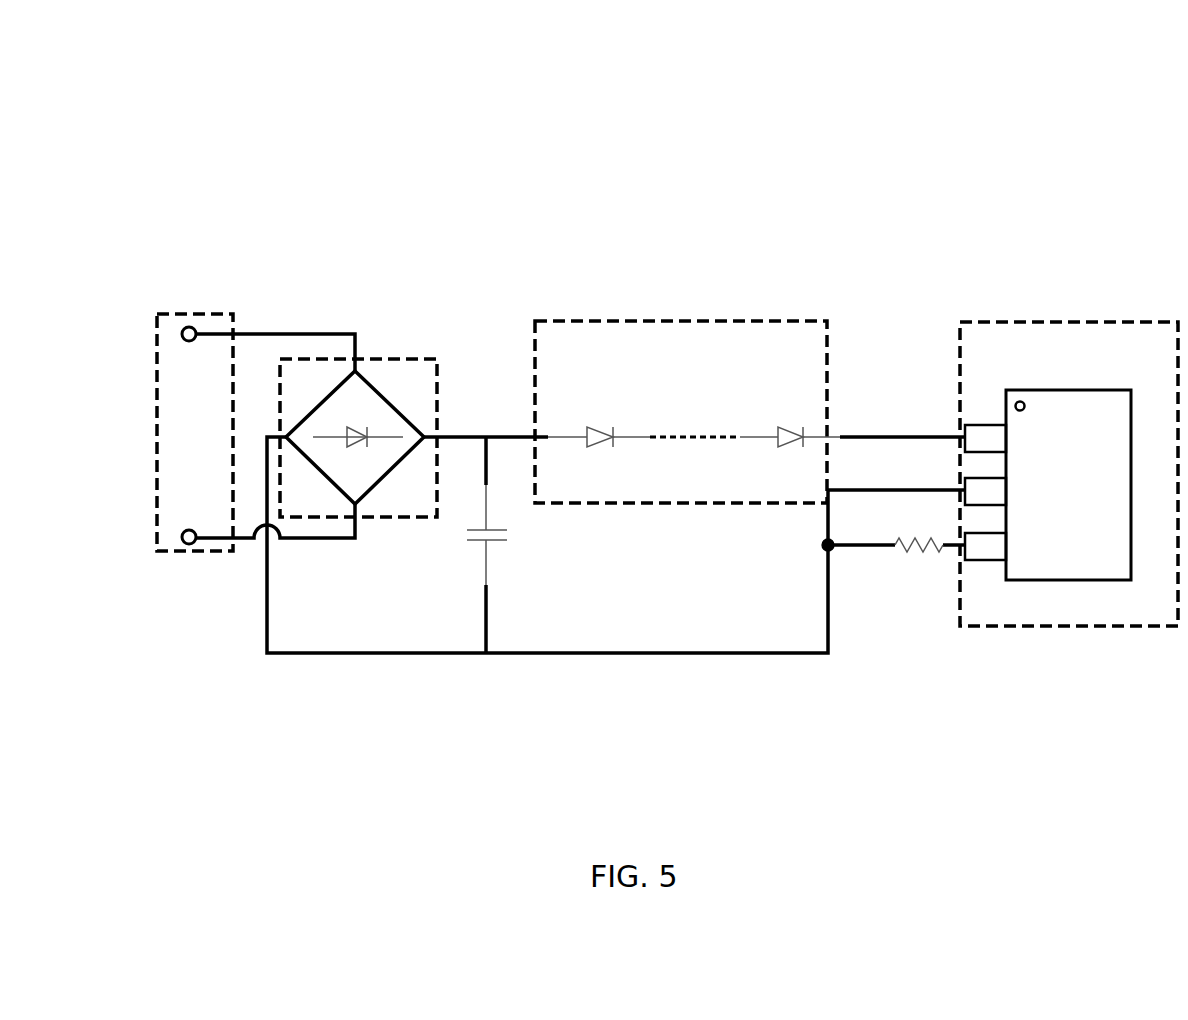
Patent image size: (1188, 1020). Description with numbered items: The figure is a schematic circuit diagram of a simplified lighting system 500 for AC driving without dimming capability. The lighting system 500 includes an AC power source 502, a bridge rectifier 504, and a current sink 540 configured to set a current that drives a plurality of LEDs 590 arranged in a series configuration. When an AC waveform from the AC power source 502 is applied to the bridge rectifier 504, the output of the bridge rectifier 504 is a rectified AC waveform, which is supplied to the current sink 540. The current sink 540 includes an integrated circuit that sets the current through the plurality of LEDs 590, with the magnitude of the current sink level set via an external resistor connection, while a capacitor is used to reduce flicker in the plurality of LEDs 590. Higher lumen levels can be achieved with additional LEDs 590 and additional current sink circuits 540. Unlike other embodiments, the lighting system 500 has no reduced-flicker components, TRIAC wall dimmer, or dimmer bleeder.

The lighting system 500 is at (361, 96).
The AC power source 502 is at (193, 315).
The bridge rectifier 504 is at (425, 358).
The plurality of LEDs 590 is at (675, 320).
The current sink 540 is at (1063, 320).